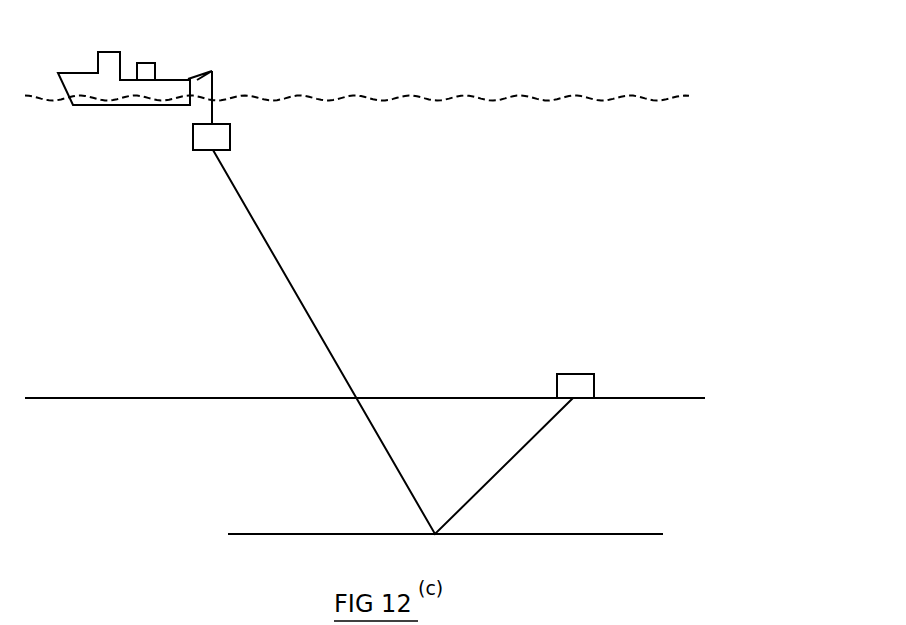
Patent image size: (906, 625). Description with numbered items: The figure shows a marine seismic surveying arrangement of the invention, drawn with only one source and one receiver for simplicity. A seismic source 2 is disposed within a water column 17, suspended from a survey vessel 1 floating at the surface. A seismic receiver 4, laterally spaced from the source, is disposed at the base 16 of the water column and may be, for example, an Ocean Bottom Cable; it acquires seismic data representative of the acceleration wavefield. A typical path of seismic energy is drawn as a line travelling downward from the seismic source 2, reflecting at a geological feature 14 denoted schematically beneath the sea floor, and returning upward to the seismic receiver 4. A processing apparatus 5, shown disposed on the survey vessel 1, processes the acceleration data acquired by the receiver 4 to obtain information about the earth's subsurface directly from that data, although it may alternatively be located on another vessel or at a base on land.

The survey vessel 1 is at (98, 72).
The processing apparatus 5 is at (146, 63).
The seismic source 2 is at (230, 135).
The water column 17 is at (622, 188).
The base of the water column 16 is at (705, 398).
The seismic receiver 4 is at (572, 374).
The geological feature 14 is at (476, 538).